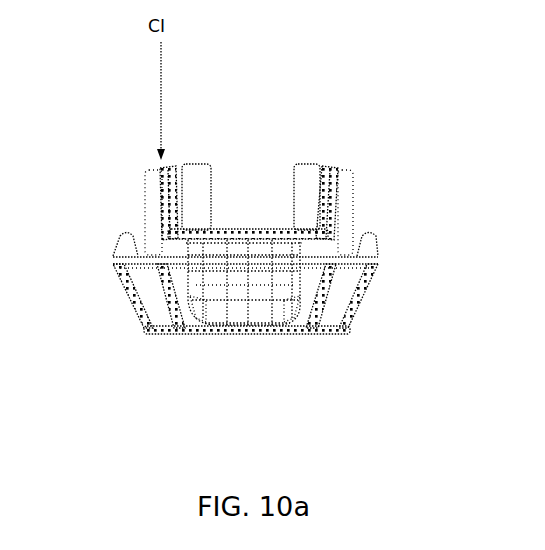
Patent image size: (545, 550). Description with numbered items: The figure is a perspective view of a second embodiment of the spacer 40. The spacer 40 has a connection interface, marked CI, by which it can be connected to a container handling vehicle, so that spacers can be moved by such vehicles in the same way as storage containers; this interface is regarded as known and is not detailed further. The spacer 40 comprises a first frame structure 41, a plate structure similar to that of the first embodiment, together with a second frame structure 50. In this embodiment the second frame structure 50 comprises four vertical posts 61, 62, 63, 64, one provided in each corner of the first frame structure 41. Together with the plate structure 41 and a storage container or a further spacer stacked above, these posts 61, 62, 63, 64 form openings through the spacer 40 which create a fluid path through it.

The spacer 40 is at (97, 98).
The first frame structure 41 is at (273, 305).
The second frame structure 50 is at (88, 290).
The vertical post 61 is at (355, 273).
The vertical post 62 is at (325, 180).
The vertical post 63 is at (177, 180).
The vertical post 64 is at (148, 300).